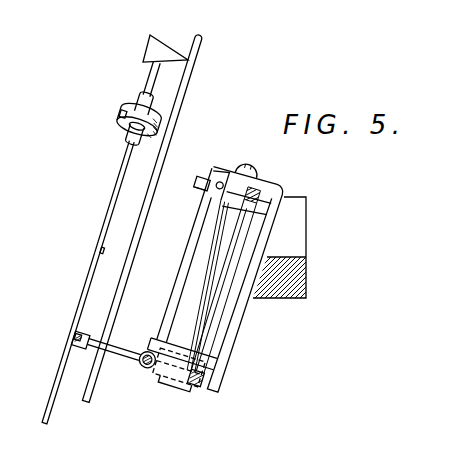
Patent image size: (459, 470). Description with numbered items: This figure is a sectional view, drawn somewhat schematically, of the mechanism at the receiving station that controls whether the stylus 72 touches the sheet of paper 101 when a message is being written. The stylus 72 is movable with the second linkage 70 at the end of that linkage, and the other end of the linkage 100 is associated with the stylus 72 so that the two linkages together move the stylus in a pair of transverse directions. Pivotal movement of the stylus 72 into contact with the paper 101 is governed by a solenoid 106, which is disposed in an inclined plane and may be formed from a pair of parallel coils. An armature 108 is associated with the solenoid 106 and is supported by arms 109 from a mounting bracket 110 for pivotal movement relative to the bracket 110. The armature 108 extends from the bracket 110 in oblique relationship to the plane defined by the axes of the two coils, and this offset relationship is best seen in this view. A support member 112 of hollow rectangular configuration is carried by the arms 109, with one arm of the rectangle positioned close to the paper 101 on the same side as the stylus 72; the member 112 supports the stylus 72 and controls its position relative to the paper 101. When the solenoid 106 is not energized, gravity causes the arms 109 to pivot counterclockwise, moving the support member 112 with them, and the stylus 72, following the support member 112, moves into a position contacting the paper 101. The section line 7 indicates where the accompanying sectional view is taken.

The section line 7- 7 is at (204, 88).
The second linkage 70 is at (118, 202).
The stylus 72 is at (150, 44).
The linkage 100 is at (87, 287).
The sheet of paper 101 is at (162, 176).
The solenoid 106 is at (215, 327).
The armature 108 is at (180, 387).
The arms 109 is at (193, 290).
The mounting bracket 110 is at (221, 172).
The support member 112 is at (117, 352).